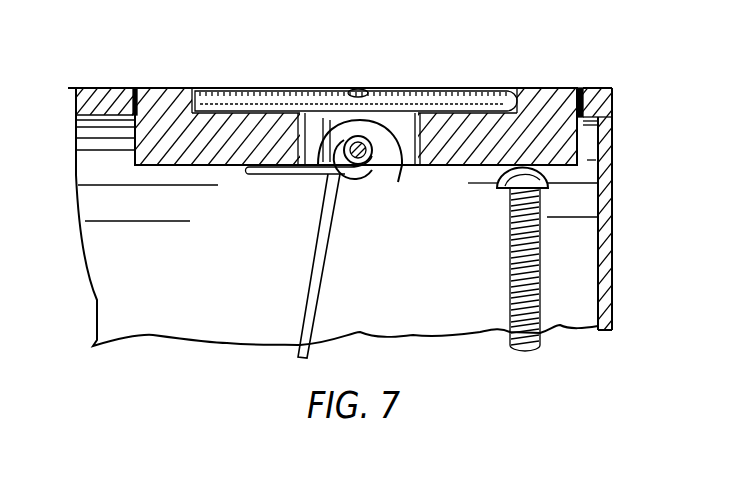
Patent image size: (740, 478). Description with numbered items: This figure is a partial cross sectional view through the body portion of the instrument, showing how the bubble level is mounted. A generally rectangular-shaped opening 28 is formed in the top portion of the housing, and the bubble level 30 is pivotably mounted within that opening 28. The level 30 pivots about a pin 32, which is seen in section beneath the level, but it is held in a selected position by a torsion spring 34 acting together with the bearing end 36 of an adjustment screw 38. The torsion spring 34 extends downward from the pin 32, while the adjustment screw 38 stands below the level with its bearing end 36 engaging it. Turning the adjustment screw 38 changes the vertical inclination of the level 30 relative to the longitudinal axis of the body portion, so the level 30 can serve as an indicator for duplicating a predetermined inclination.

The opening 28 is at (131, 88).
The bubble level 30 is at (425, 87).
The pin 32 is at (377, 168).
The torsion spring 34 is at (325, 280).
The bearing end 36 is at (503, 186).
The adjustment screw 38 is at (510, 278).